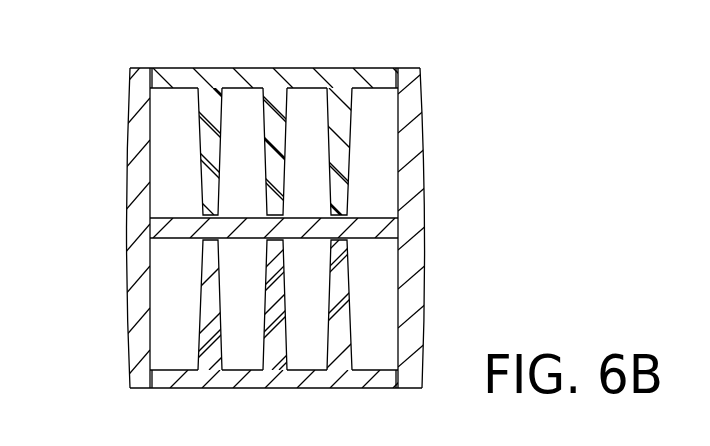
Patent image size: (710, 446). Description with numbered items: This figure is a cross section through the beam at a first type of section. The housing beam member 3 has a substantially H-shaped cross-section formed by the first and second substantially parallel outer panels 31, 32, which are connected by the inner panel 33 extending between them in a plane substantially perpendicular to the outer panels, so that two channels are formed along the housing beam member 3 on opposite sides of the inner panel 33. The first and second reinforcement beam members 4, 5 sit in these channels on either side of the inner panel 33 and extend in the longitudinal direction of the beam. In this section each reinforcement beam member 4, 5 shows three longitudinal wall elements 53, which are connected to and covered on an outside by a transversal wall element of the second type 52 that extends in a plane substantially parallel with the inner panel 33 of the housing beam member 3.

The housing beam member 3 is at (140, 218).
The first outer panel 31 is at (140, 137).
The second outer panel 32 is at (408, 137).
The inner panel 33 is at (362, 231).
The first reinforcement beam member 4 is at (217, 80).
The second reinforcement beam member 5 is at (218, 378).
The transversal wall element of the second type 52 is at (377, 80).
The longitudinal wall element 53 is at (274, 100).